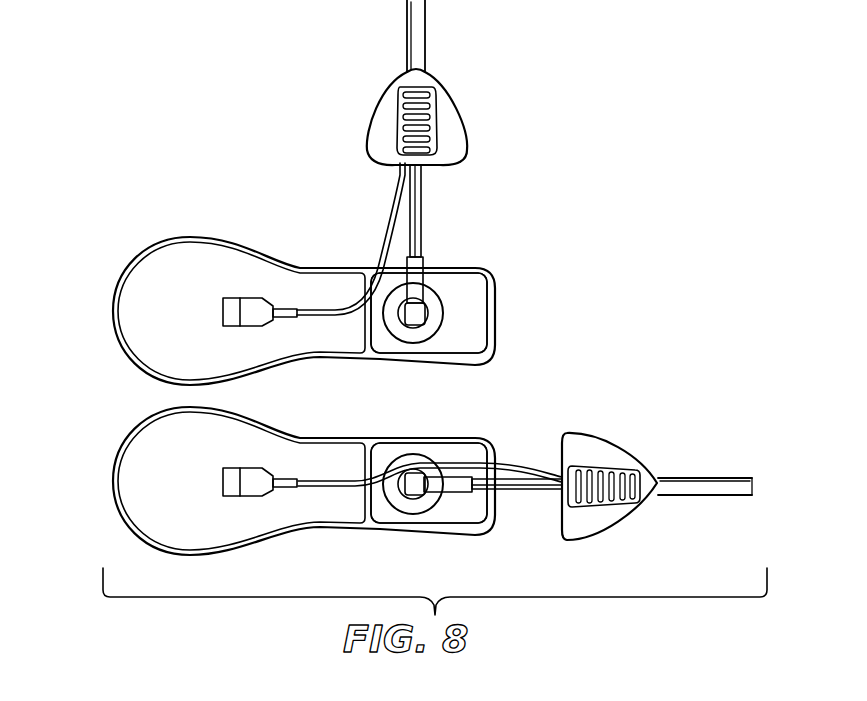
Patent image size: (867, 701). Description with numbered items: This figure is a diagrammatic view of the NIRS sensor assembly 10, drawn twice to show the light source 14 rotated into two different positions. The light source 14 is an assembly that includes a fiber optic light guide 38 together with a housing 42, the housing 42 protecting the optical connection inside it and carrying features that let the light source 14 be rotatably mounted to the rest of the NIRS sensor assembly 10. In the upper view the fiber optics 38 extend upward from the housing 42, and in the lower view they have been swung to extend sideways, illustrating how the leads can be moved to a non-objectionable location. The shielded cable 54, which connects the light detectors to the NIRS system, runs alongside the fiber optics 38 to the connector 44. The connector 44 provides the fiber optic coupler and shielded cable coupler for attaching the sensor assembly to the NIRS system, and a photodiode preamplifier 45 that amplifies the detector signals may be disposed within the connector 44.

The NIRS sensor assembly 10 is at (140, 234).
The light source 14 is at (440, 283).
The fiber optic light guide 38 is at (424, 212).
The housing 42 is at (445, 312).
The connector 44 is at (452, 88).
The photodiode preamplifier 45 is at (465, 160).
The shielded cable 54 is at (376, 208).